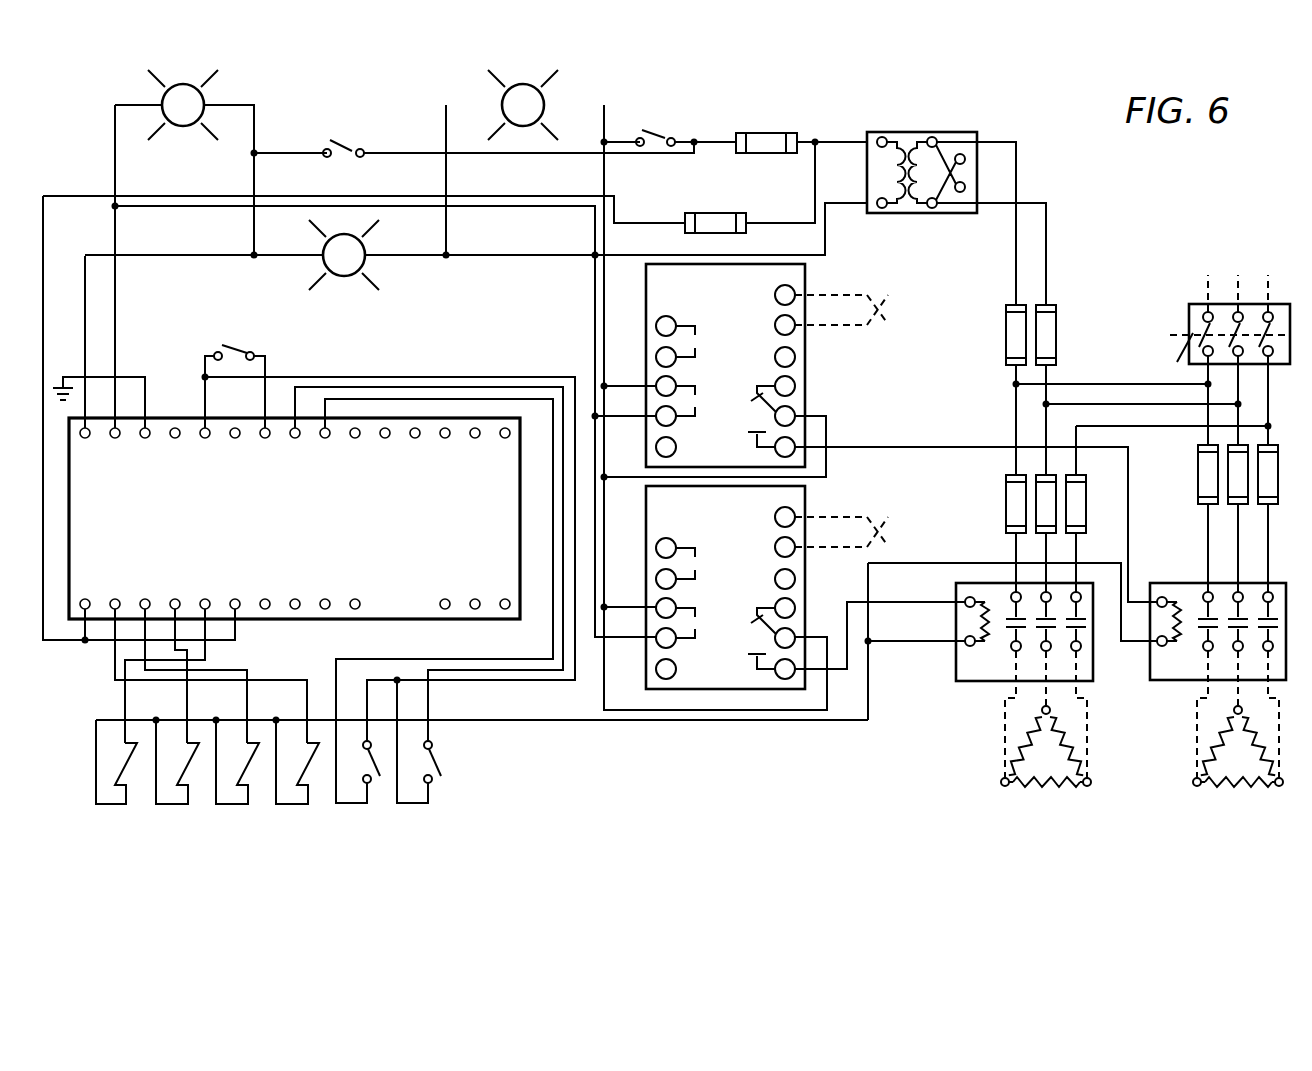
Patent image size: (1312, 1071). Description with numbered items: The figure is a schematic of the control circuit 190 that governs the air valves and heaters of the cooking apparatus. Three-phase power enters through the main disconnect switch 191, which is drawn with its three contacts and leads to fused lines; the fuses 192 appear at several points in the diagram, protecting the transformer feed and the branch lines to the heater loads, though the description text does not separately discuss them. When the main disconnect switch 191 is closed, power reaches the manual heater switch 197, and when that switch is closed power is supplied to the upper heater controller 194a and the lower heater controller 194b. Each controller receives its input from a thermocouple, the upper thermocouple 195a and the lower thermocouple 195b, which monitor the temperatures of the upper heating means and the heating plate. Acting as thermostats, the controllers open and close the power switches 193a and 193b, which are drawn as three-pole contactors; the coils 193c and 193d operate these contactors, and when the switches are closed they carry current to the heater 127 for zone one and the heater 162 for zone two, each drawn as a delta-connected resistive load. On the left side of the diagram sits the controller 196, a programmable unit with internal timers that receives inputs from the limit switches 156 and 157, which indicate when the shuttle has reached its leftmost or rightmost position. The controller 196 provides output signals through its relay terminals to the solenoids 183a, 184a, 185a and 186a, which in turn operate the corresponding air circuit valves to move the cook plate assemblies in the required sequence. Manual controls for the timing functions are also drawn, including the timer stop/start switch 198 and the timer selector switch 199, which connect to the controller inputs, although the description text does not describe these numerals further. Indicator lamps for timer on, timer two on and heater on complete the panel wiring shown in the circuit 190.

The control circuit 190 is at (98, 82).
The main disconnect switch 191 is at (1189, 332).
The fuse 192 is at (713, 212).
The power switch 193a is at (1168, 682).
The power switch 193b is at (975, 683).
The contactor coil 193c is at (1184, 618).
The contactor coil 193d is at (994, 622).
The upper heater controller 194a is at (740, 456).
The lower heater controller 194b is at (740, 678).
The thermocouple 195a is at (895, 306).
The thermocouple 195b is at (895, 528).
The controller 196 is at (322, 506).
The heater switch 197 is at (668, 130).
The timer stop/start switch 198 is at (328, 158).
The timer selector switch 199 is at (254, 352).
The heater 127 is at (1183, 764).
The heater 162 is at (992, 764).
The solenoid 183a is at (129, 789).
The solenoid 184a is at (251, 789).
The solenoid 185a is at (311, 789).
The solenoid 186a is at (191, 789).
The limit switch 156 is at (369, 788).
The limit switch 157 is at (430, 783).